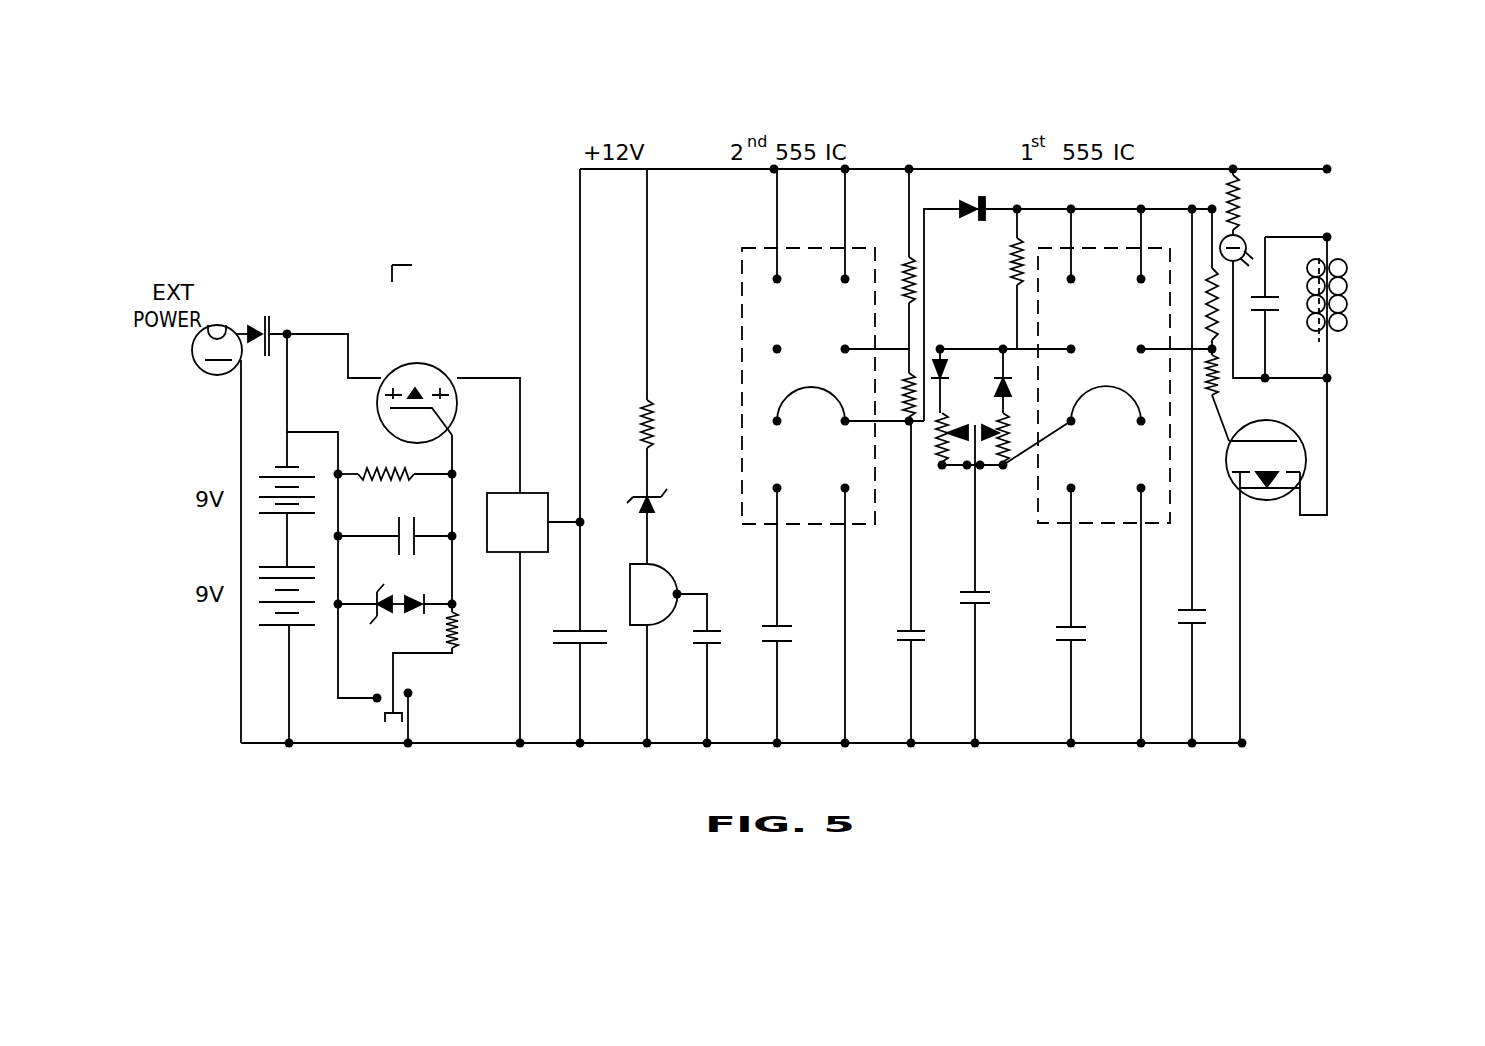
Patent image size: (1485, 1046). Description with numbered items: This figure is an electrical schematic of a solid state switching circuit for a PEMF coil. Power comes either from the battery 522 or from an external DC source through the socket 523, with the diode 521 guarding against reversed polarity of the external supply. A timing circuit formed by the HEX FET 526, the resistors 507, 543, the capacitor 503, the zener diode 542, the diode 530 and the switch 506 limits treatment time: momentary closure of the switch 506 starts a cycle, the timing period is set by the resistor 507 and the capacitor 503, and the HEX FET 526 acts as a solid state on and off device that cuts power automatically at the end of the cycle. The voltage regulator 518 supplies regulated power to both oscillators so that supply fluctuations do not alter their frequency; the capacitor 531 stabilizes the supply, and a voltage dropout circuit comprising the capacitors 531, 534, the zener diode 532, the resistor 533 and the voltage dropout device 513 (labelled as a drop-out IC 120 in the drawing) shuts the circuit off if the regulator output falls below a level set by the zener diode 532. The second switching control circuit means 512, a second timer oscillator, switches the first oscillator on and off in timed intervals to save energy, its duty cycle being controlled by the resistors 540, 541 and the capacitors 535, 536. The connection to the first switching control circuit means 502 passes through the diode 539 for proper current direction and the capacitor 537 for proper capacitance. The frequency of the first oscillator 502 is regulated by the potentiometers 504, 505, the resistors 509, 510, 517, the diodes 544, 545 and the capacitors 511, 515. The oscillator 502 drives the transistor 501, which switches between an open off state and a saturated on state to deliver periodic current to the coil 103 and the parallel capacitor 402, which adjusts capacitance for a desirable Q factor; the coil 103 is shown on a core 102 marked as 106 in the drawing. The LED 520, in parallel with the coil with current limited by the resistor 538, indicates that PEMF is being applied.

The socket 523 is at (231, 329).
The diode 521 is at (331, 322).
The HEX FET 526 is at (506, 373).
The voltage regulator 518 is at (513, 485).
The resistor 507 is at (395, 475).
The capacitor 503 is at (395, 533).
The battery 522 is at (223, 553).
The zener diode 542 is at (385, 655).
The diode 530 is at (440, 645).
The resistor 543 is at (503, 635).
The switch 506 is at (401, 704).
The 4.5 volt drop-out IC 120 is at (588, 373).
The resistor 533 is at (700, 435).
The zener diode 532 is at (708, 512).
The voltage dropout device 513 is at (718, 577).
The capacitor 531 is at (630, 677).
The capacitor 534 is at (758, 677).
The second switching control circuit means 512 is at (833, 555).
The capacitor 536 is at (777, 670).
The resistor 540 is at (876, 308).
The resistor 541 is at (876, 411).
The capacitor 535 is at (904, 625).
The diode 539 is at (981, 244).
The first switching control circuit means 502 is at (1118, 201).
The resistor 517 is at (1008, 287).
The diode 545 is at (995, 373).
The diode 544 is at (995, 416).
The potentiometer 504 is at (961, 511).
The potentiometer 505 is at (1023, 511).
The capacitor 515 is at (992, 604).
The capacitor 511 is at (1091, 670).
The capacitor 537 is at (1235, 663).
The resistor 510 is at (1202, 282).
The resistor 509 is at (1208, 398).
The transistor 501 is at (1270, 560).
The resistor 538 is at (1254, 202).
The LED 520 is at (1276, 296).
The capacitor 402 is at (1310, 261).
The core 102 is at (1337, 254).
The coil core 106 is at (1451, 225).
The coil 103 is at (1339, 331).